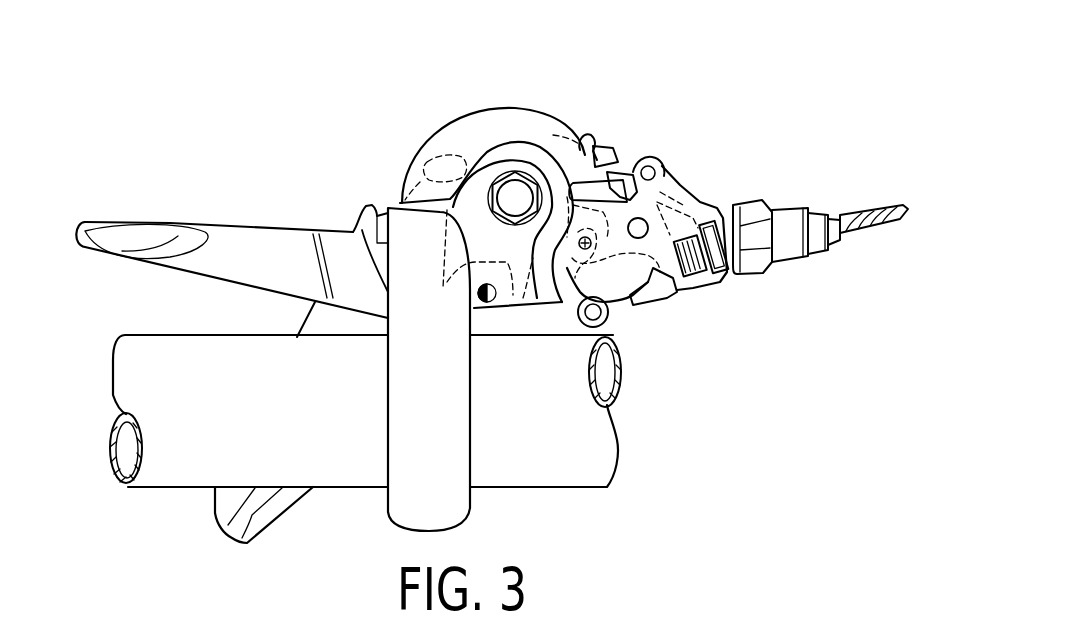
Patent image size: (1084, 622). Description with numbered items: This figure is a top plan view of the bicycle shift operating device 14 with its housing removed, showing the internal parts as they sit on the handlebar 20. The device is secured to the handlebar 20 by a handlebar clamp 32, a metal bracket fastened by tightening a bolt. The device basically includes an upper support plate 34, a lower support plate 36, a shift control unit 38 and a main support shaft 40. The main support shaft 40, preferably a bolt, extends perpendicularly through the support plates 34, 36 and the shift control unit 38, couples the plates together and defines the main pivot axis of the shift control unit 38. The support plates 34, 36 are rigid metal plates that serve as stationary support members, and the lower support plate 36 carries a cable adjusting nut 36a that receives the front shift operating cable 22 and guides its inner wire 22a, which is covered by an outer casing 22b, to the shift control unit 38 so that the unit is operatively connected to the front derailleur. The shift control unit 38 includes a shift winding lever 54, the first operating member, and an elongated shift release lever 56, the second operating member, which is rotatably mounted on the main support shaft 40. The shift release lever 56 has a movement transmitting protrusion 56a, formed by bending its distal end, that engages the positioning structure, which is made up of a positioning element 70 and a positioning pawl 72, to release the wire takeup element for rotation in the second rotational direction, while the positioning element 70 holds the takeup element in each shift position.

The bicycle shift operating device 14 is at (632, 105).
The handlebar 20 is at (605, 488).
The front shift operating cable 22 is at (918, 302).
The inner wire 22a is at (875, 221).
The outer casing 22b is at (838, 247).
The handlebar clamp 32 is at (388, 512).
The upper support plate 34 is at (706, 200).
The lower support plate 36 is at (683, 187).
The cable adjusting nut 36a is at (757, 283).
The shift control unit 38 is at (557, 119).
The main support shaft 40 is at (510, 190).
The shift winding lever 54 is at (232, 542).
The shift release lever 56 is at (208, 224).
The movement transmitting protrusion 56a is at (658, 283).
The positioning element 70 is at (585, 132).
The positioning pawl 72 is at (627, 163).